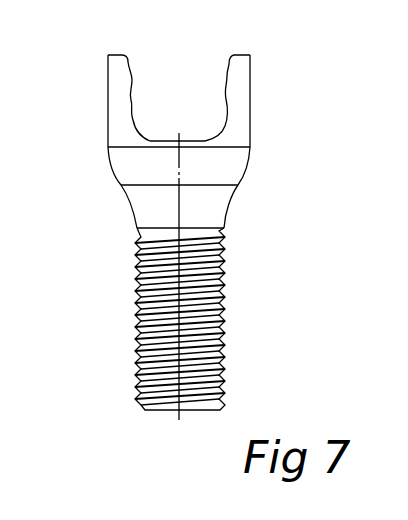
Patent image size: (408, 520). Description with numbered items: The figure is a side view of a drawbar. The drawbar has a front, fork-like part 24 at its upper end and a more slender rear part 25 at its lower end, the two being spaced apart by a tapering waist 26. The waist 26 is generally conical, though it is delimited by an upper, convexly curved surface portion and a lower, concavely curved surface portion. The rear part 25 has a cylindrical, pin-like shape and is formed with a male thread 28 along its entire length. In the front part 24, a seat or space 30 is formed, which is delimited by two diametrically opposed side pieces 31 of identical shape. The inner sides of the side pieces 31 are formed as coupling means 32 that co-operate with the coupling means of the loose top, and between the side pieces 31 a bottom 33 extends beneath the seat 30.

The front, fork-like part 24 is at (86, 168).
The rear part 25 is at (110, 340).
The tapering waist 26 is at (123, 210).
The male thread 28 is at (222, 318).
The seat or space 30 is at (212, 119).
The side pieces 31 is at (112, 95).
The coupling means 32 is at (143, 75).
The bottom 33 is at (172, 141).